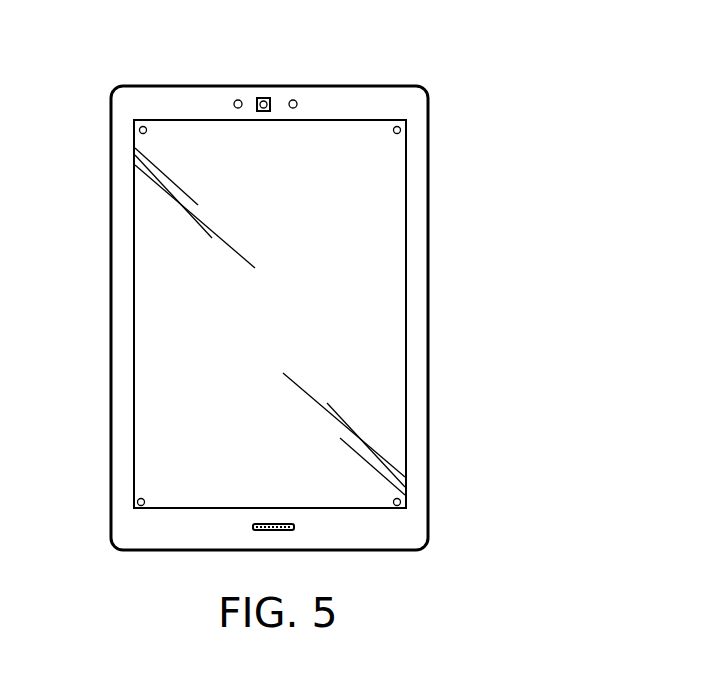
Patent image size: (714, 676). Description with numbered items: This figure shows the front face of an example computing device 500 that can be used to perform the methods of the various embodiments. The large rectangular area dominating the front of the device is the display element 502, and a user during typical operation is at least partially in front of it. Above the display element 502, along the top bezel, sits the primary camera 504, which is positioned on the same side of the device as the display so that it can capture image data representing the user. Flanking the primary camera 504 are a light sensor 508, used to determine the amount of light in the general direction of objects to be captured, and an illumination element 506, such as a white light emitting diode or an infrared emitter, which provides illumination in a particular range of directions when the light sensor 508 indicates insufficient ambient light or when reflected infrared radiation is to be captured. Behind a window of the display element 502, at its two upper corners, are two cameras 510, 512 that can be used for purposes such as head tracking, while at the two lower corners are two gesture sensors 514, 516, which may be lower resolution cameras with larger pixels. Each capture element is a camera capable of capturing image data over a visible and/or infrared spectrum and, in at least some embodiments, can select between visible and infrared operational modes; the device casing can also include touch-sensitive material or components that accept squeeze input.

The computing device 500 is at (605, 106).
The display element 502 is at (134, 197).
The primary camera 504 is at (265, 97).
The illumination element 506 is at (295, 101).
The light sensor 508 is at (235, 100).
The camera 510 is at (134, 122).
The camera 512 is at (406, 121).
The gesture sensor 514 is at (134, 502).
The gesture sensor 516 is at (406, 508).